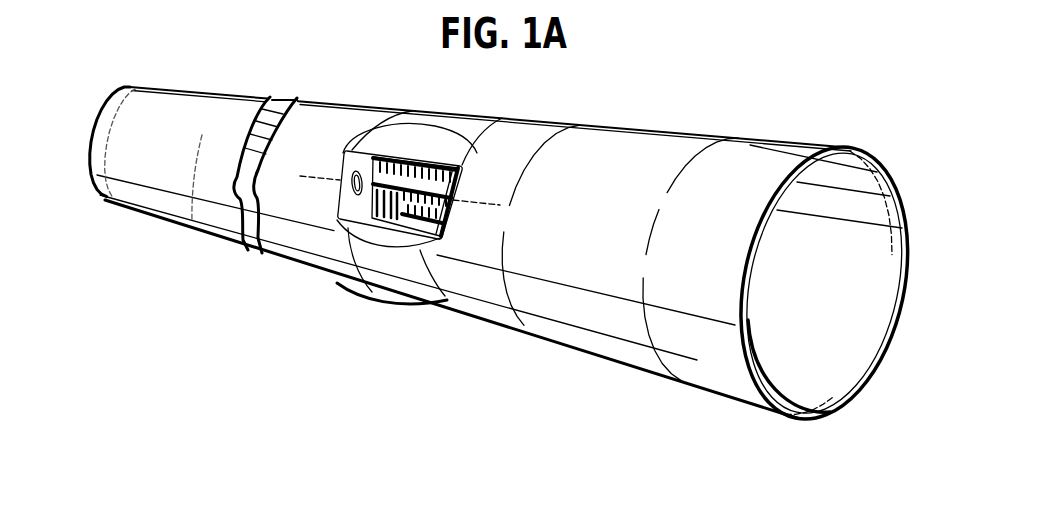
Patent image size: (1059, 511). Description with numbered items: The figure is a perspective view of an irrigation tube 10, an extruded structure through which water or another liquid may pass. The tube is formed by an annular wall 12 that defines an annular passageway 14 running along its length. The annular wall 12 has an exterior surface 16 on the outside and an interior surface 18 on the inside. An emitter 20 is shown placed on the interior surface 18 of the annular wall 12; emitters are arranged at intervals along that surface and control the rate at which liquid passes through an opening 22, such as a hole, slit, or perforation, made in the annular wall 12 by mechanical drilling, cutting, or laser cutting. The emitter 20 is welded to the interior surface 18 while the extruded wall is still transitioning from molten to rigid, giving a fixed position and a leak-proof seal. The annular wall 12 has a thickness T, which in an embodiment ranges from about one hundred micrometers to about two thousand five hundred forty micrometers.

The irrigation tube 10 is at (686, 113).
The annular wall 12 is at (166, 145).
The annular passageway 14 is at (821, 299).
The exterior surface 16 is at (620, 235).
The interior surface 18 is at (862, 363).
The emitter 20 is at (372, 168).
The opening 22 is at (345, 192).
The thickness T is at (742, 325).